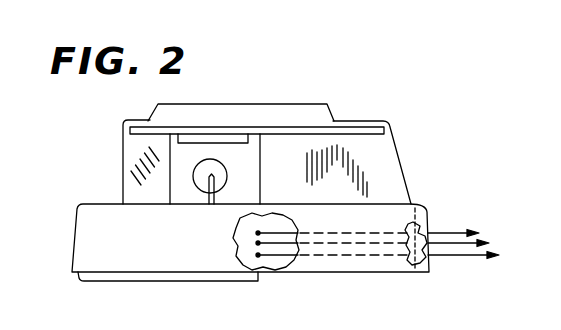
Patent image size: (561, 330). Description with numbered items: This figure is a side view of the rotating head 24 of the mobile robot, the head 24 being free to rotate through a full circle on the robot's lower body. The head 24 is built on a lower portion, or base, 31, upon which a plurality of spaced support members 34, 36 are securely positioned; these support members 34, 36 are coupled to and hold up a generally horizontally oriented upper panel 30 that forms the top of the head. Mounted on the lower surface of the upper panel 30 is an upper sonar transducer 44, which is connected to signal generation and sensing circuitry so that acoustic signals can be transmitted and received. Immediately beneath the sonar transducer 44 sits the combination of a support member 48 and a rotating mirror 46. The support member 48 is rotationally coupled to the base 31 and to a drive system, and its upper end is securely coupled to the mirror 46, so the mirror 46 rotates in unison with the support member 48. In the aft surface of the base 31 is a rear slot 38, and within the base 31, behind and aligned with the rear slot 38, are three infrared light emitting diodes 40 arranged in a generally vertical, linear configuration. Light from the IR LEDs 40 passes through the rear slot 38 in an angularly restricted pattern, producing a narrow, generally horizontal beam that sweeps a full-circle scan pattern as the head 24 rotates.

The head 24 is at (264, 192).
The upper panel 30 is at (298, 104).
The lower portion 31 is at (74, 237).
The support member 34 is at (145, 183).
The support member 36 is at (298, 191).
The rear slot 38 is at (431, 234).
The infrared light emitting diodes 40 is at (233, 254).
The upper sonar transducer 44 is at (191, 139).
The rotating mirror 46 is at (194, 172).
The support member 48 is at (215, 199).